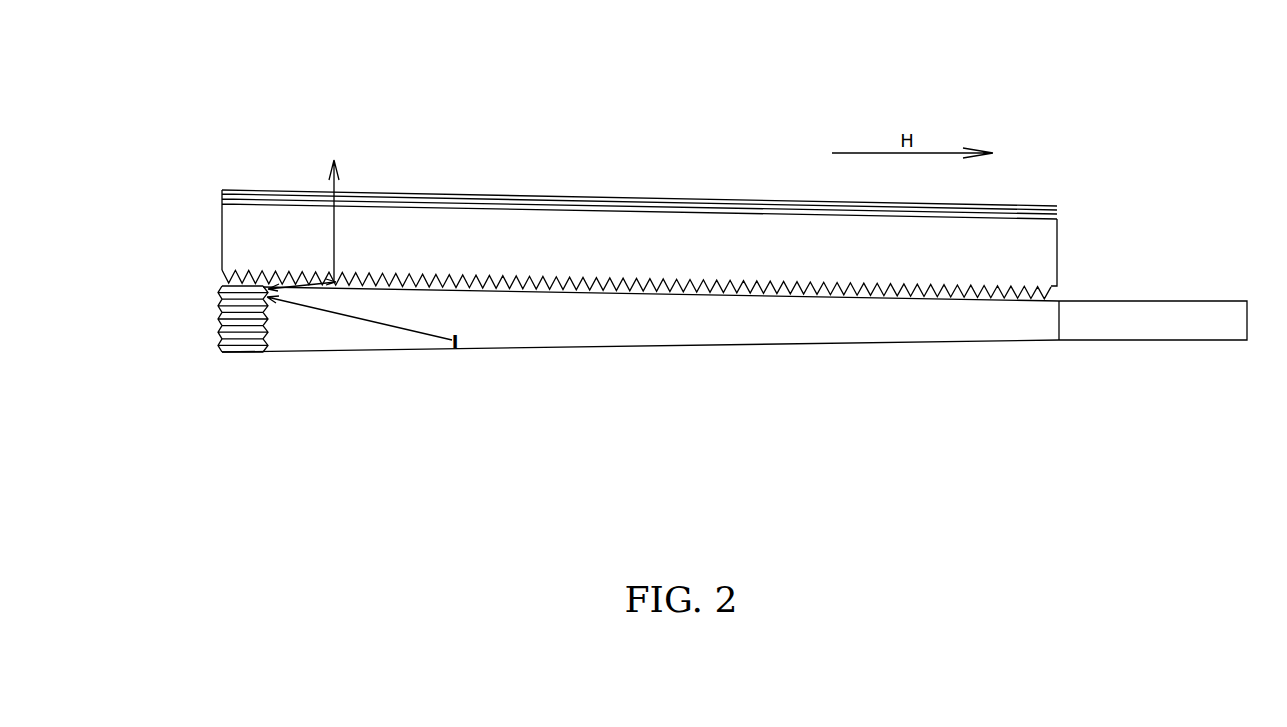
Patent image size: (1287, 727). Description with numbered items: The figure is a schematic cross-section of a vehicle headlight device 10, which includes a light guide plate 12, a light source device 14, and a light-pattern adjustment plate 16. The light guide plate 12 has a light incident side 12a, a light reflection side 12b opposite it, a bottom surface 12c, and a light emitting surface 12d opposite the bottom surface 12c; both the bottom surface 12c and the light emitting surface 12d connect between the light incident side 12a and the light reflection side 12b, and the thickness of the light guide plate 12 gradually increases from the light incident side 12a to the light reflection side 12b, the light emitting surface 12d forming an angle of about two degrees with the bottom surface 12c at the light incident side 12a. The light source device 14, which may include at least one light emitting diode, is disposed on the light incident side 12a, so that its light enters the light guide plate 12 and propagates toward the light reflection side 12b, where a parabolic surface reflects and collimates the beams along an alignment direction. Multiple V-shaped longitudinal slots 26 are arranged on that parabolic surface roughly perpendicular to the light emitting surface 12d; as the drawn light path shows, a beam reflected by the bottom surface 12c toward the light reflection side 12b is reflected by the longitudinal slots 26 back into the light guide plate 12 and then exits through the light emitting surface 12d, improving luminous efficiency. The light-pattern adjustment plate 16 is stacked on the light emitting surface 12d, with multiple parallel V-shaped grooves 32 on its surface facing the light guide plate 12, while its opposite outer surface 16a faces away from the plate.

The vehicle headlight device 10 is at (275, 50).
The light guide plate 12 is at (746, 352).
The light incident side 12a is at (1059, 322).
The light reflection side 12b is at (270, 364).
The bottom surface 12c is at (622, 348).
The light emitting surface 12d is at (590, 294).
The light source device 14 is at (1140, 338).
The light-pattern adjustment plate 16 is at (1076, 247).
The top surface of optical film 16a is at (711, 211).
The longitudinal slots 26 is at (241, 333).
The grooves 32 is at (531, 298).